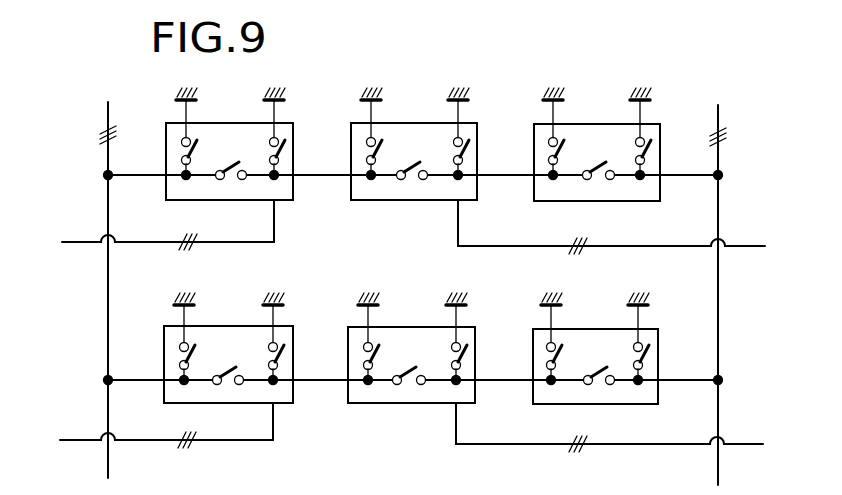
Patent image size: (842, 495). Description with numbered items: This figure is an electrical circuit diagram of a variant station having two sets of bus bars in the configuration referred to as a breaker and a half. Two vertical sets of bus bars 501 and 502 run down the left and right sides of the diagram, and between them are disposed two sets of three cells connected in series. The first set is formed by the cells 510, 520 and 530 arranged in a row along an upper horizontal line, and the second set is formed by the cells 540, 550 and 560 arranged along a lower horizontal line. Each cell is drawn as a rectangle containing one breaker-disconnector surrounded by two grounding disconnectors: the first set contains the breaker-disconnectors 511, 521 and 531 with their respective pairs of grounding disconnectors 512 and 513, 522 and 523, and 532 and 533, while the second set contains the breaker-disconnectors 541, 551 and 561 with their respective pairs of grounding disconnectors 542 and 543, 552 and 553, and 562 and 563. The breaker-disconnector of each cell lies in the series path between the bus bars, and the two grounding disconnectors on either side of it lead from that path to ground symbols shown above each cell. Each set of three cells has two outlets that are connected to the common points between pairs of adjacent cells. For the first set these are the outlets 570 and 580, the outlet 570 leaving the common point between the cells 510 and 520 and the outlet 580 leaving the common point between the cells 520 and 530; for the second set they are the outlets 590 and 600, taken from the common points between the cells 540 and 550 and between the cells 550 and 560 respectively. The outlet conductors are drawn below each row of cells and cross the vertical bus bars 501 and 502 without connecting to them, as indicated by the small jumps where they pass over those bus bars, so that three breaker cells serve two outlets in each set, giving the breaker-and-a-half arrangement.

The bus bar set 501 is at (108, 212).
The bus bar set 502 is at (718, 214).
The cell 510 is at (216, 123).
The breaker-disconnector 511 is at (229, 177).
The grounding disconnector 512 is at (183, 150).
The grounding disconnector 513 is at (283, 148).
The cell 520 is at (399, 123).
The breaker-disconnector 521 is at (410, 177).
The grounding disconnector 522 is at (377, 152).
The grounding disconnector 523 is at (467, 150).
The cell 530 is at (583, 124).
The breaker-disconnector 531 is at (596, 177).
The grounding disconnector 532 is at (553, 150).
The grounding disconnector 533 is at (650, 149).
The cell 540 is at (216, 326).
The breaker-disconnector 541 is at (228, 382).
The grounding disconnector 542 is at (188, 354).
The grounding disconnector 543 is at (283, 353).
The cell 550 is at (397, 327).
The breaker-disconnector 551 is at (410, 382).
The grounding disconnector 552 is at (373, 355).
The grounding disconnector 553 is at (467, 355).
The cell 560 is at (580, 329).
The breaker-disconnector 561 is at (599, 383).
The grounding disconnector 562 is at (552, 353).
The grounding disconnector 563 is at (649, 354).
The outlet 570 is at (170, 242).
The outlet 580 is at (525, 246).
The outlet 590 is at (146, 440).
The outlet 600 is at (502, 444).